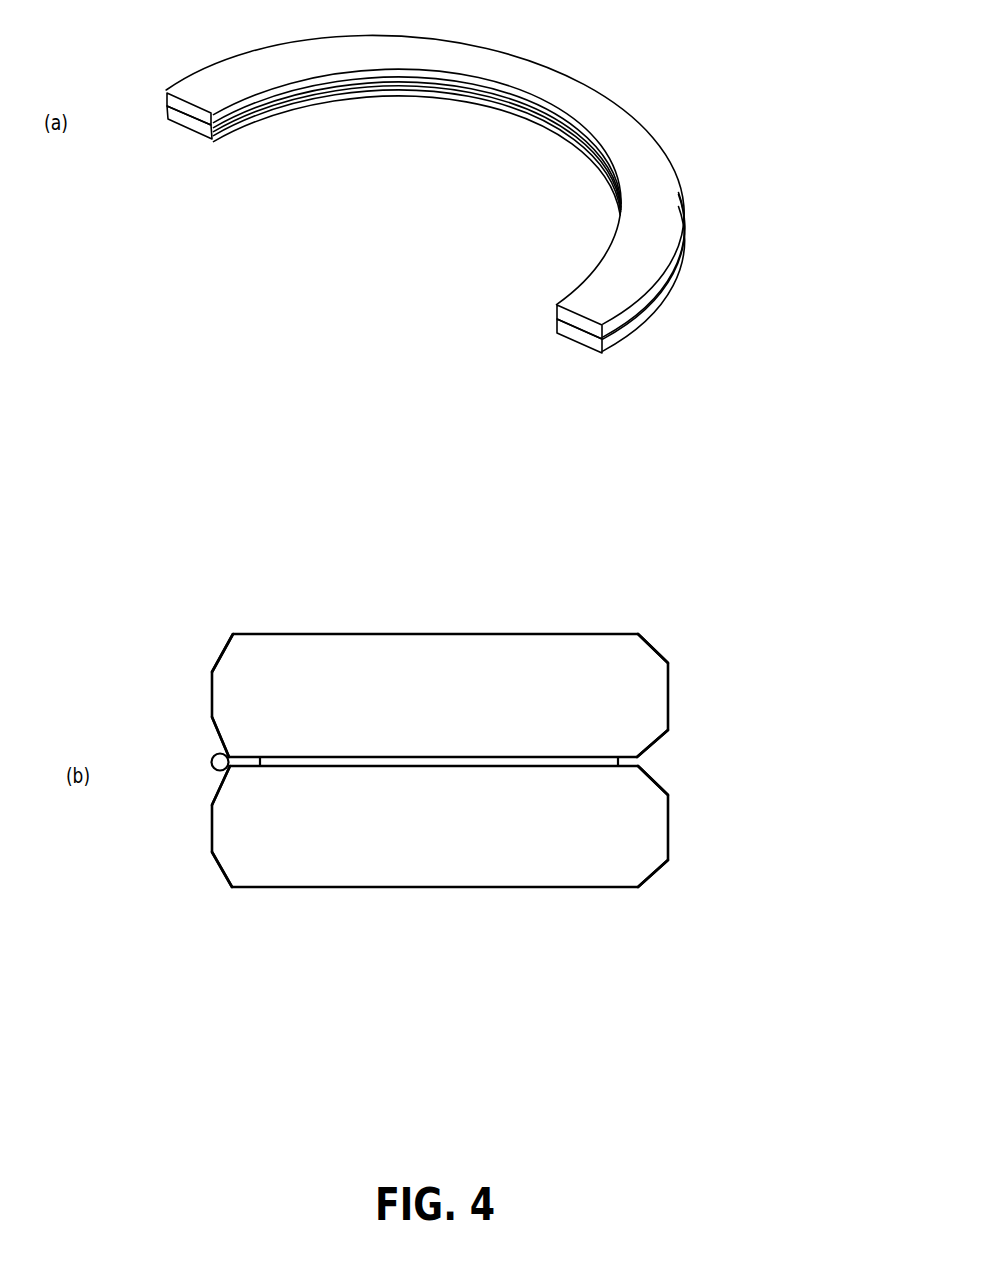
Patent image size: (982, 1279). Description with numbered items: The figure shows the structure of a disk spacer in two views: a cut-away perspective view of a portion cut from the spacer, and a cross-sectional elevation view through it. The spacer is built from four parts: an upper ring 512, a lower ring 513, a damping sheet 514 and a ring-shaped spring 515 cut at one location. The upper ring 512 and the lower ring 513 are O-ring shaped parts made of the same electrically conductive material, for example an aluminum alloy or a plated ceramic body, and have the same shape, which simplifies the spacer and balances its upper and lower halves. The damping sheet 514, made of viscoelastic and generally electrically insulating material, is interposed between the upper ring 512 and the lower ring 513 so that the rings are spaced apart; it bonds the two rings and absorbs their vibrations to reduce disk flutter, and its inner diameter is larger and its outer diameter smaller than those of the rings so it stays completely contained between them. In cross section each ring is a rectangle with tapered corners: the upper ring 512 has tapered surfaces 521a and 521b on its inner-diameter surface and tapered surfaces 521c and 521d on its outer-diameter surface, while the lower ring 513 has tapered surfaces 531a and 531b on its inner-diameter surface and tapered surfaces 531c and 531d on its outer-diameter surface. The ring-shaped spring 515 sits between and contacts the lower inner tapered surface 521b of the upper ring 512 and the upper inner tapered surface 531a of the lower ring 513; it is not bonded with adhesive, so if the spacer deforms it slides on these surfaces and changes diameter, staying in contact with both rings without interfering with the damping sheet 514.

The upper ring 512 is at (184, 96).
The lower ring 513 is at (187, 132).
The damping sheet 514 is at (640, 759).
The ring-shaped spring 515 is at (241, 125).
The tapered surface 521a is at (222, 652).
The ID lower tapered surface 521b is at (221, 742).
The tapered surface 521c is at (660, 652).
The tapered surface 521d is at (663, 745).
The ID upper tapered surface 531a is at (220, 786).
The tapered surface 531b is at (214, 858).
The tapered surface 531c is at (658, 786).
The tapered surface 531d is at (655, 873).